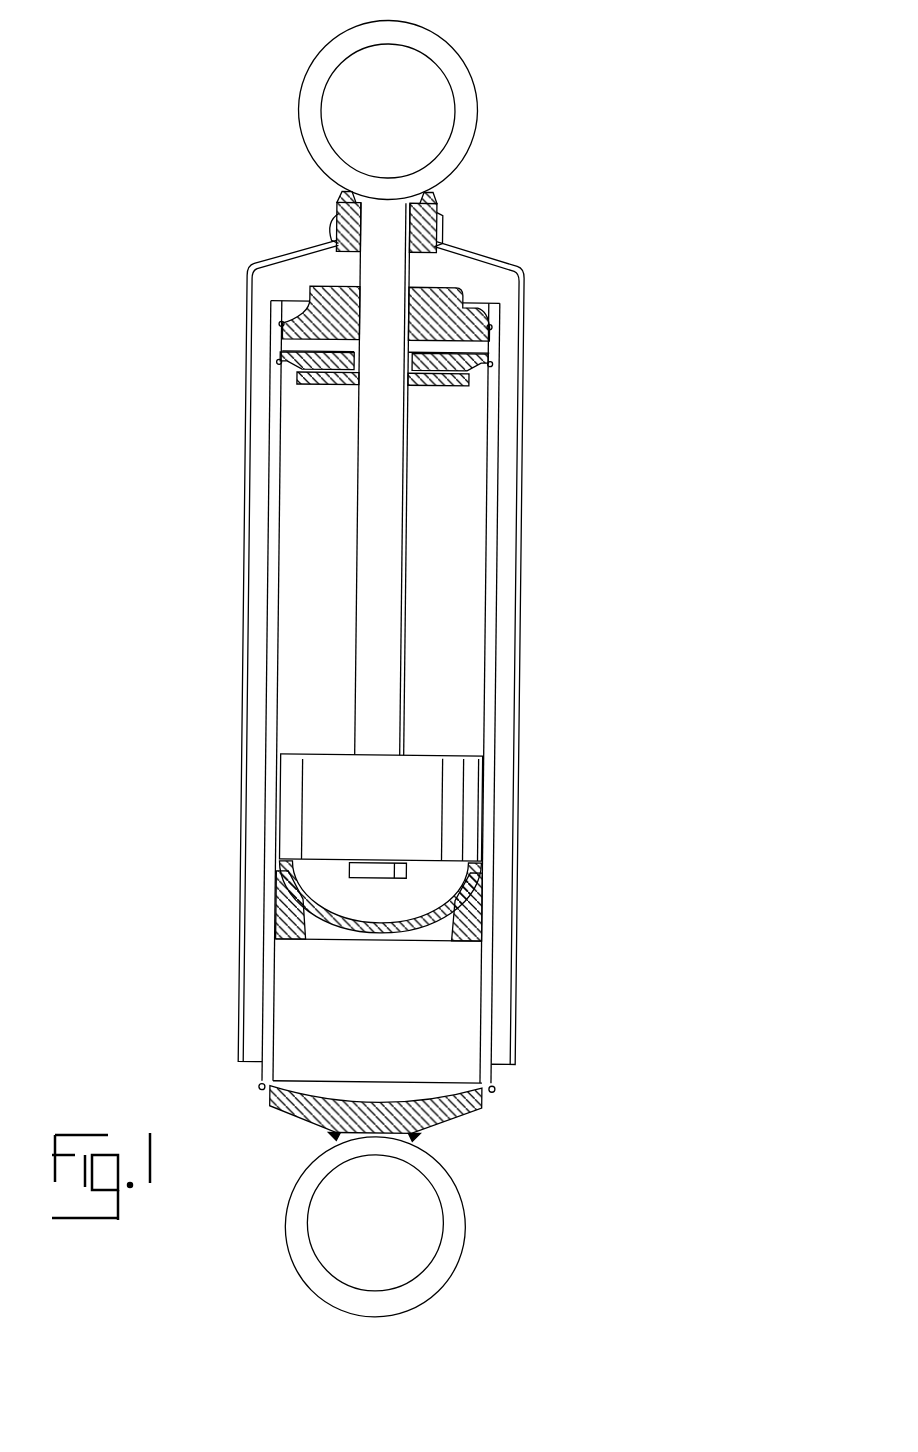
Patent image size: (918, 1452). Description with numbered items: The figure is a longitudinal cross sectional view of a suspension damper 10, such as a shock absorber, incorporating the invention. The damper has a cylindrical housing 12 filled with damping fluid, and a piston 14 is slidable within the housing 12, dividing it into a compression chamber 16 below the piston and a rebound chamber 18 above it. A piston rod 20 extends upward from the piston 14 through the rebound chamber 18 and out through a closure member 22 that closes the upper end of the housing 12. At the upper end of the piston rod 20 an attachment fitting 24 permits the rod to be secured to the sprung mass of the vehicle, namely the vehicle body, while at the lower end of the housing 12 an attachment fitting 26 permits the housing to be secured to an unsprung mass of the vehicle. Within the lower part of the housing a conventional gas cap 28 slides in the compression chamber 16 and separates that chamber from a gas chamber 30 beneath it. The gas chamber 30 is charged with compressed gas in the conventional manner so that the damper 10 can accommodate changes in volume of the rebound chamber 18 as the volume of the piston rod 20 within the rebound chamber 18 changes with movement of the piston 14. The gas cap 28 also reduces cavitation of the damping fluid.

The suspension damper 10 is at (389, 665).
The cylindrical housing 12 is at (499, 639).
The piston 14 is at (320, 825).
The compression chamber 16 is at (378, 957).
The rebound chamber 18 is at (466, 580).
The piston rod 20 is at (394, 432).
The closure member 22 is at (320, 316).
The attachment fitting 24 is at (455, 55).
The attachment fitting 26 is at (463, 1266).
The gas cap 28 is at (373, 940).
The gas chamber 30 is at (462, 1026).